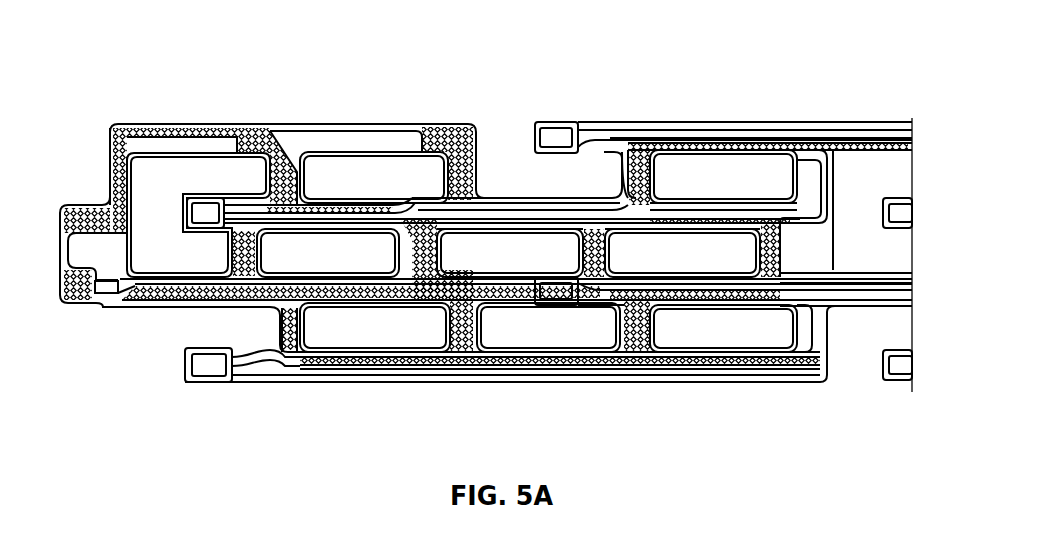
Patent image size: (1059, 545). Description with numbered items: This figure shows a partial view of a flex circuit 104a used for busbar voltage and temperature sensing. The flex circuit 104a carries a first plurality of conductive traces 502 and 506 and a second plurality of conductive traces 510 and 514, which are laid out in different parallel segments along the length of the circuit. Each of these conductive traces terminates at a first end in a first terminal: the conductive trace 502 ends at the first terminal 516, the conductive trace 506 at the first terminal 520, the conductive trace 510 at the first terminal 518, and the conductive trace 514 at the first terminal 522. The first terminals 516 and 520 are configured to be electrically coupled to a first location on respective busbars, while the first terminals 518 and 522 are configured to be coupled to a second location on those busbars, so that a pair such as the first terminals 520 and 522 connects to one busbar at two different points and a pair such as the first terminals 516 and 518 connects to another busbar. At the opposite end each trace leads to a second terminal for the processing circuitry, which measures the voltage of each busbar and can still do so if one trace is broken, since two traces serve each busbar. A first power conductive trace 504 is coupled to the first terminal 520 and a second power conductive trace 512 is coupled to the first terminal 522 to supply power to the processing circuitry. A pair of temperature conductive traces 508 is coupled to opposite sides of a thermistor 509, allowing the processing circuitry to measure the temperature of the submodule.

The flexible circuit 104a is at (160, 78).
The conductive trace 502 is at (755, 128).
The first power conductive trace 504 is at (806, 140).
The conductive trace 506 is at (867, 145).
The temperature conductive traces 508 is at (875, 273).
The thermistor 509 is at (117, 287).
The conductive trace 510 is at (893, 283).
The second power conductive trace 512 is at (893, 300).
The conductive trace 514 is at (893, 303).
The first terminal 516 is at (552, 140).
The first terminal 518 is at (553, 290).
The first terminal 520 is at (207, 213).
The first terminal 522 is at (205, 365).